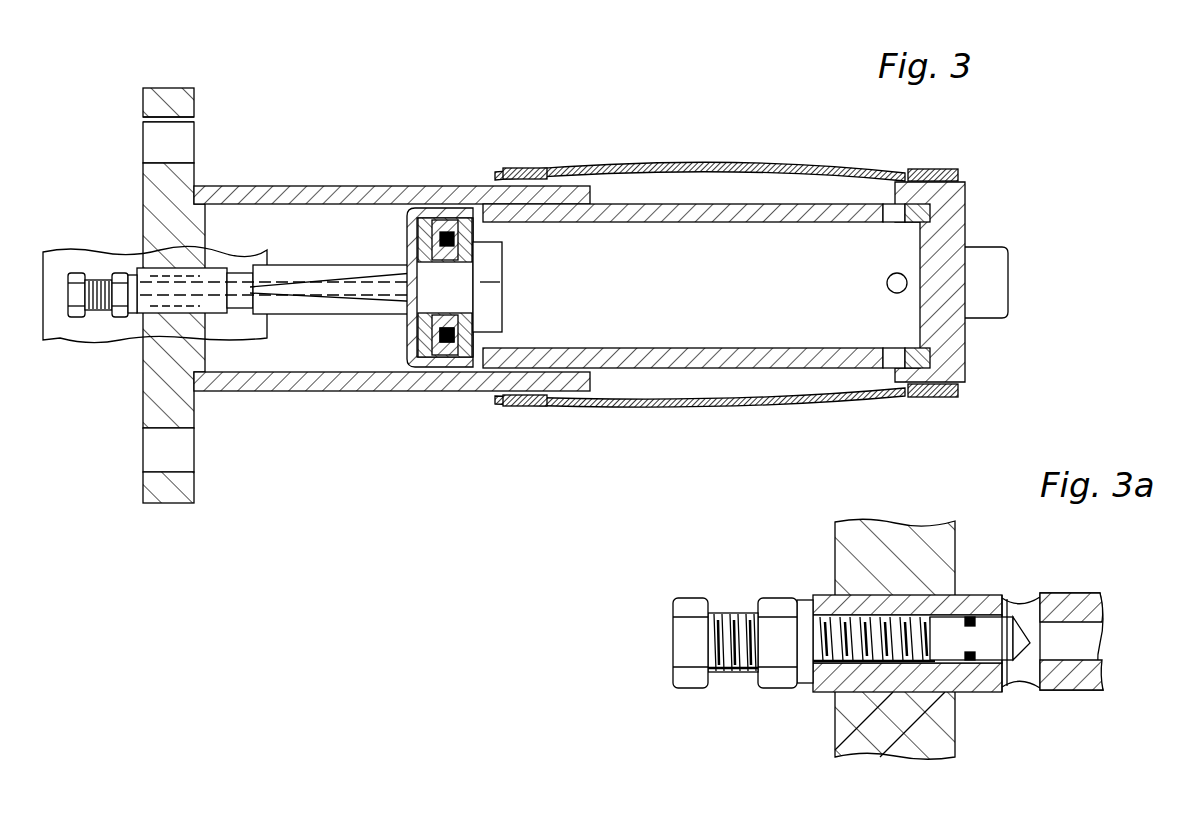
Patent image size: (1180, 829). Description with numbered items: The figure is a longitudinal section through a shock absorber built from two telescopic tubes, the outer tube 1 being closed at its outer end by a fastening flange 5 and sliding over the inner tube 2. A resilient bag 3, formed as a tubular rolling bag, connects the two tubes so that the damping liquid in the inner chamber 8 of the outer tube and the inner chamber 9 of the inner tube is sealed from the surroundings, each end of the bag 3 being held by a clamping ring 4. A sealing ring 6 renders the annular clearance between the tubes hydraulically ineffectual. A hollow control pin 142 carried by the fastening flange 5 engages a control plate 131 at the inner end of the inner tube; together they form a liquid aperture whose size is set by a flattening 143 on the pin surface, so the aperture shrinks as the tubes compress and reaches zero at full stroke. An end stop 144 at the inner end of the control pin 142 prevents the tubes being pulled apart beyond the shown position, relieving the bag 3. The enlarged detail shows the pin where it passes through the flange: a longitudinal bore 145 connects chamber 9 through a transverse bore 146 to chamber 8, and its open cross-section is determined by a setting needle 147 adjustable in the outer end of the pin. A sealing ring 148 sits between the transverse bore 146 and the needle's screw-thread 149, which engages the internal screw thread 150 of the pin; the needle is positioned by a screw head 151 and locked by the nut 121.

In FIG. 3, the outer tube 1 is at (314, 187).
In FIG. 3, the inner tube 2 is at (608, 204).
In FIG. 3, the resilient bag 3 is at (681, 163).
In FIG. 3, the clamping ring 4 is at (521, 168).
In FIG. 3, the fastening flange 5 is at (172, 92).
In FIG. 3, the sealing ring 6 is at (456, 207).
In FIG. 3, the inner chamber 8 is at (320, 253).
In FIG. 3, the inner chamber 9 is at (794, 283).
In FIG. 3, the nut 121 is at (111, 295).
In FIG. 3A, the nut 121 is at (768, 608).
In FIG. 3, the control plate 131 is at (490, 345).
In FIG. 3, the control pin 142 is at (300, 312).
In FIG. 3A, the control pin 142 is at (1067, 682).
In FIG. 3, the flattening 143 is at (352, 292).
In FIG. 3, the end stop 144 is at (490, 253).
In FIG. 3, the longitudinal bore 145 is at (500, 290).
In FIG. 3A, the longitudinal bore 145 is at (1070, 630).
In FIG. 3A, the transverse bore 146 is at (1025, 605).
In FIG. 3A, the setting needle 147 is at (997, 657).
In FIG. 3A, the sealing ring 148 is at (972, 615).
In FIG. 3A, the screw-thread 149 is at (810, 685).
In FIG. 3A, the screw thread 150 is at (835, 731).
In FIG. 3, the screw head 151 is at (76, 295).
In FIG. 3A, the screw head 151 is at (687, 628).